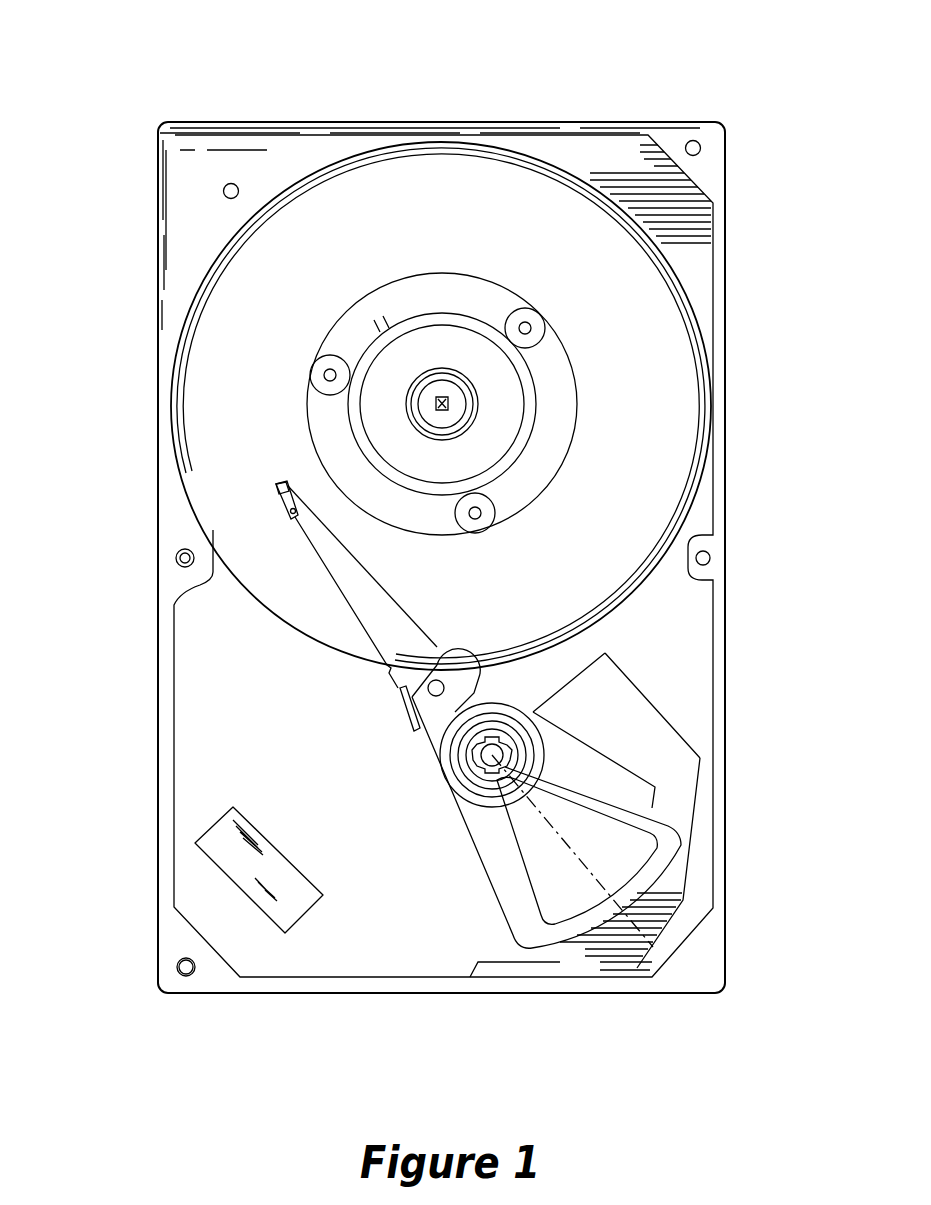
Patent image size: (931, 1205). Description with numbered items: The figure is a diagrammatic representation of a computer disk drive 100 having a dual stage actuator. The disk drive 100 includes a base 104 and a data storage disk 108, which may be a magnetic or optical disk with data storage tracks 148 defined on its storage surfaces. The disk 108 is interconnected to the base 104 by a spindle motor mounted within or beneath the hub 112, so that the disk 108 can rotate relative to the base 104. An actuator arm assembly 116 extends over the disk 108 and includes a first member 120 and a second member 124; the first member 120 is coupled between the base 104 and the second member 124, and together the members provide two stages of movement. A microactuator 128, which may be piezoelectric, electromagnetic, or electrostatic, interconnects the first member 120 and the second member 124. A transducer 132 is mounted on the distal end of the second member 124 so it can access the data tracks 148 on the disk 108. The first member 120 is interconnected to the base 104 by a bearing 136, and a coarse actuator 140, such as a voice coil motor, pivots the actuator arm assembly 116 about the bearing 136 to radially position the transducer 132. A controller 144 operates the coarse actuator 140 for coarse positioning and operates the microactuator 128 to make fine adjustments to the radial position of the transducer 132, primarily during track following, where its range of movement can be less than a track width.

The disk drive 100 is at (453, 100).
The base 104 is at (695, 643).
The data storage disk 108 is at (682, 374).
The hub 112 is at (428, 412).
The actuator arm assembly 116 is at (328, 583).
The first member 120 is at (360, 620).
The second member 124 is at (283, 503).
The microactuator 128 is at (293, 515).
The transducer 132 is at (278, 486).
The bearing 136 is at (493, 758).
The coarse actuator 140 is at (550, 930).
The controller 144 is at (240, 879).
The data tracks 148 is at (367, 167).